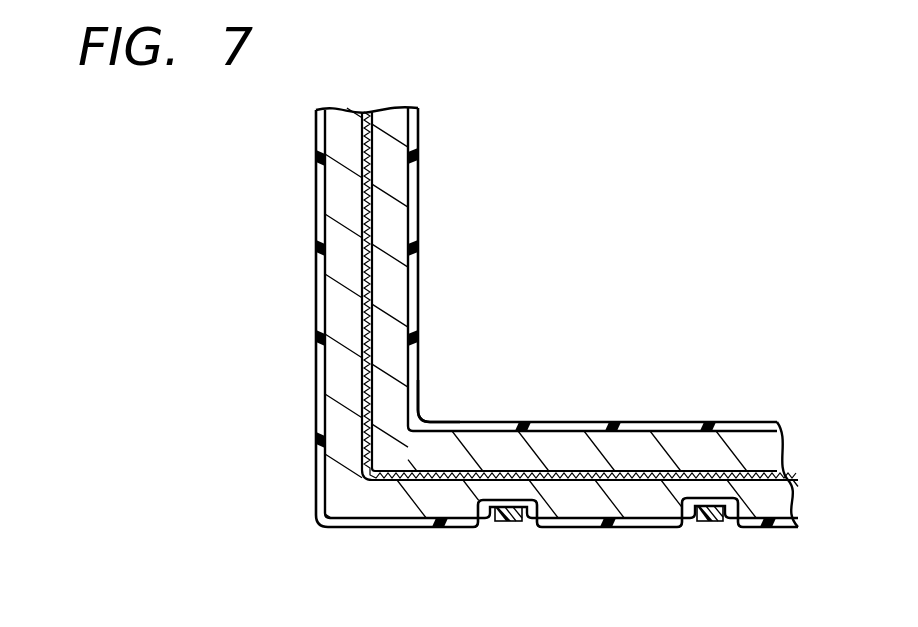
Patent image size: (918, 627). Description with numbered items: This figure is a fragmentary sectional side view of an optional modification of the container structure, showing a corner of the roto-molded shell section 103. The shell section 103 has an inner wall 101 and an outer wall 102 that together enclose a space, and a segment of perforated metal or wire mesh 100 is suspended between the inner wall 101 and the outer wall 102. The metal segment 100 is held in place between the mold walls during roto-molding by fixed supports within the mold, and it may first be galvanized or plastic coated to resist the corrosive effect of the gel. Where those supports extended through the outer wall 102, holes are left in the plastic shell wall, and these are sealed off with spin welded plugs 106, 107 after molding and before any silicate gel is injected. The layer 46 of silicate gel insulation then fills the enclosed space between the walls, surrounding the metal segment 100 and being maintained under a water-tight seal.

The layer of silicate gel insulation 46 is at (360, 393).
The segment of perforated metal or wire mesh 100 is at (373, 130).
The inner wall 101 is at (418, 222).
The outer wall 102 is at (317, 230).
The roto-molded shell section 103 is at (432, 394).
The spin welded plug 106 is at (505, 521).
The spin welded plug 107 is at (713, 521).